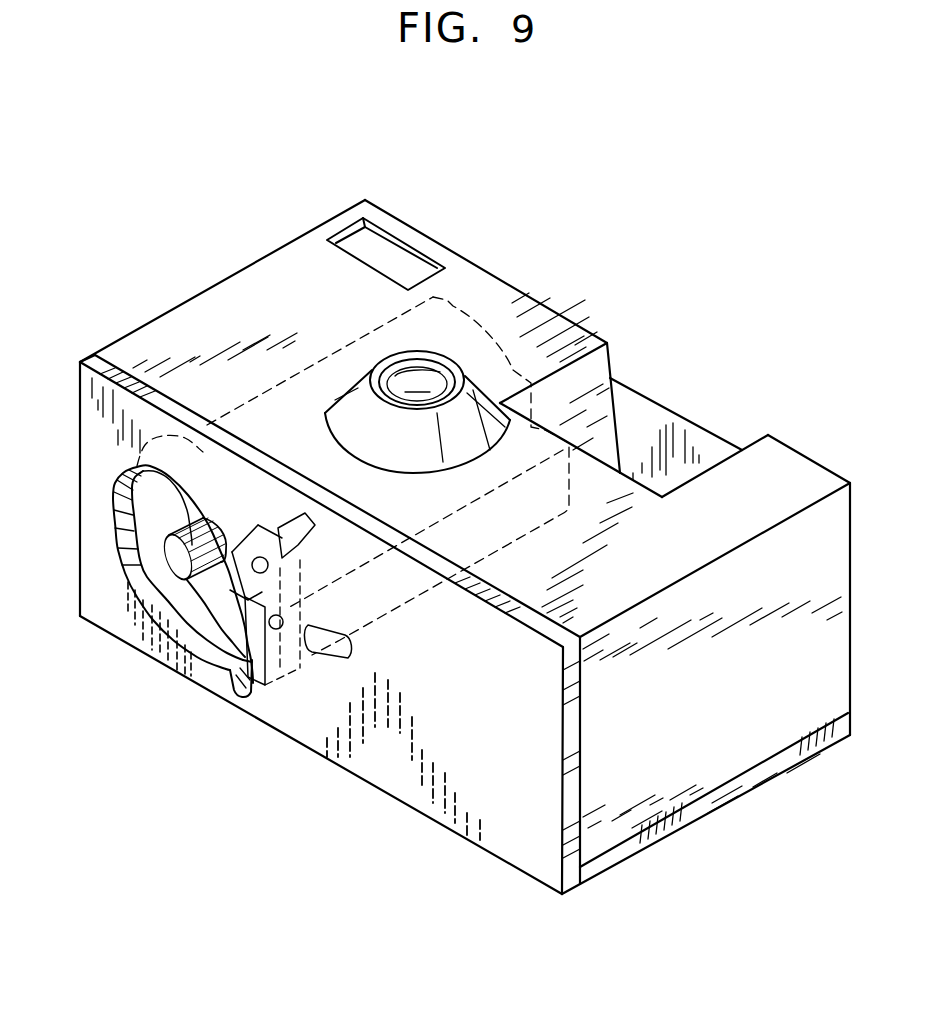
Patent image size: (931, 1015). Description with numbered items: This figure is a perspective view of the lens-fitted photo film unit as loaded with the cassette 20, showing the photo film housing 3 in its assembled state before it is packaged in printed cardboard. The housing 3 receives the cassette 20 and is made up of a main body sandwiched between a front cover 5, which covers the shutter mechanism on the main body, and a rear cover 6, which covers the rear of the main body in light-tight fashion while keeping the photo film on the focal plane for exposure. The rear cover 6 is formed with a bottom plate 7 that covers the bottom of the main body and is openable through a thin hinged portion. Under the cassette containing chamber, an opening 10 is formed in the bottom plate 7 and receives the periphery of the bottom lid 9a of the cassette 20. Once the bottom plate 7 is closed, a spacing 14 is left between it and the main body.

The photo film housing 3 is at (528, 873).
The front cover 5 is at (532, 317).
The rear cover 6 is at (690, 815).
The bottom plate 7 is at (398, 773).
The bottom lid 9a is at (160, 495).
The opening 10 is at (200, 653).
The spacing 14 is at (153, 553).
The cassette 20 is at (337, 347).